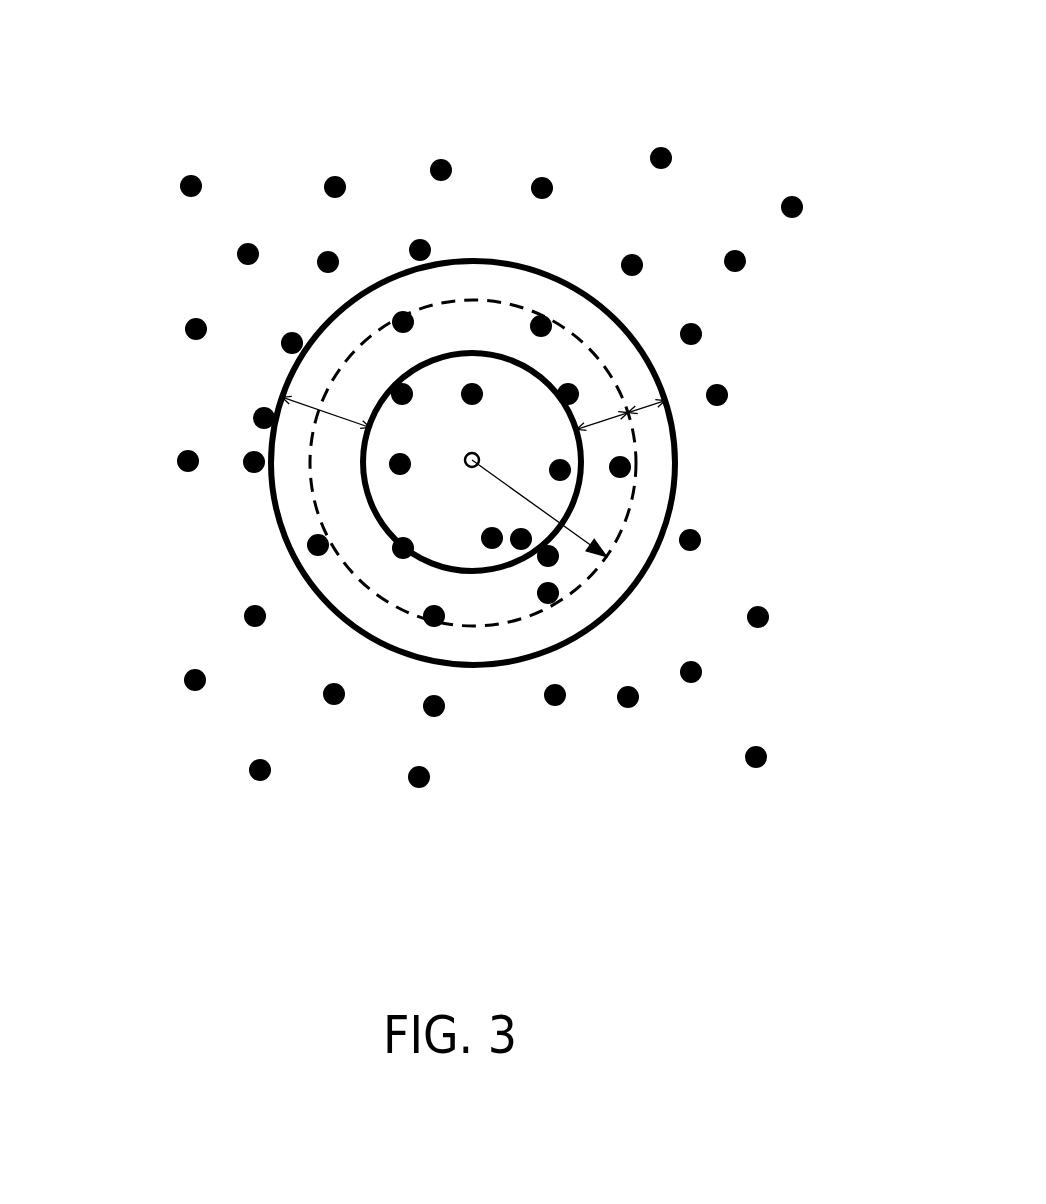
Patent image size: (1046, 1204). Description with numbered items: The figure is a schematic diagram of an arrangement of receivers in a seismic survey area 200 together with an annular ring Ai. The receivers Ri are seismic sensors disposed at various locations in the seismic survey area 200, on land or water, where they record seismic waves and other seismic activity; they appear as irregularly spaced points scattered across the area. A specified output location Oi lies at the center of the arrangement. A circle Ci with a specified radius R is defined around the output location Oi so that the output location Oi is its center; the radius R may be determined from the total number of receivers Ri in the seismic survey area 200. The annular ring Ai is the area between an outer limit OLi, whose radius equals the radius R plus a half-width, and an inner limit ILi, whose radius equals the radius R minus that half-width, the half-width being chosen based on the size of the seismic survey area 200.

The seismic survey area 200 is at (413, 31).
The receivers Ri is at (190, 174).
The annular ring Ai is at (303, 400).
The circle Ci is at (588, 348).
The output location Oi is at (478, 452).
The outer limit OLi is at (677, 468).
The inner limit ILi is at (580, 493).
The radius R is at (539, 508).